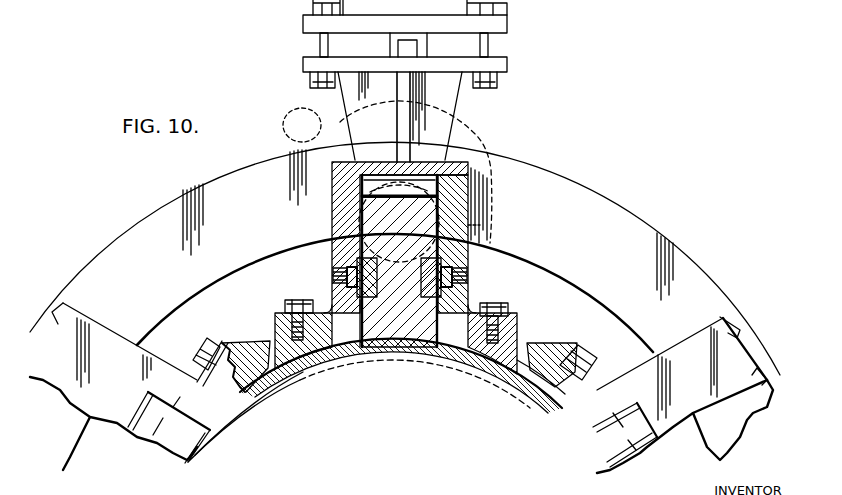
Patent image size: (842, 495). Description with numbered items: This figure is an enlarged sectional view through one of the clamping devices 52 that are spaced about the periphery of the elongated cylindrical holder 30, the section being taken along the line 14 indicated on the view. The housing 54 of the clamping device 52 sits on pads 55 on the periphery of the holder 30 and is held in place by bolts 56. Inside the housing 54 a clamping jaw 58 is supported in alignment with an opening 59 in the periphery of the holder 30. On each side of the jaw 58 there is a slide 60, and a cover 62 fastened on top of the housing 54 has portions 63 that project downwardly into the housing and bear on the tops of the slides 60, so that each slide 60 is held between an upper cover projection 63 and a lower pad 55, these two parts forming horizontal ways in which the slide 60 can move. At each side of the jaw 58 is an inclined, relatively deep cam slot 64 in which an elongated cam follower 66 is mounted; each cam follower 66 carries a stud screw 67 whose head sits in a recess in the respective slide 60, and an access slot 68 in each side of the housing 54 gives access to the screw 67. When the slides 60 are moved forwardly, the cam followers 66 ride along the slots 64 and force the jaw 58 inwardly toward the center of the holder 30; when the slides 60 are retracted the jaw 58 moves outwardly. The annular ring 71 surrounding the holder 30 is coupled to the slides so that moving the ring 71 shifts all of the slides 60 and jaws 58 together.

The section line 14 is at (417, 138).
The holder 30 is at (518, 374).
The clamping device 52 is at (490, 207).
The housing 54 is at (480, 228).
The pad 55 is at (278, 340).
The bolt 56 is at (310, 296).
The clamping jaw 58 is at (406, 345).
The opening 59 is at (358, 348).
The slide 60 is at (332, 222).
The cover 62 is at (415, 160).
The projection 63 is at (316, 158).
The cam slot 64 is at (386, 344).
The cam follower 66 is at (342, 269).
The stud screw 67 is at (330, 273).
The access slot 68 is at (470, 286).
The ring 71 is at (663, 241).